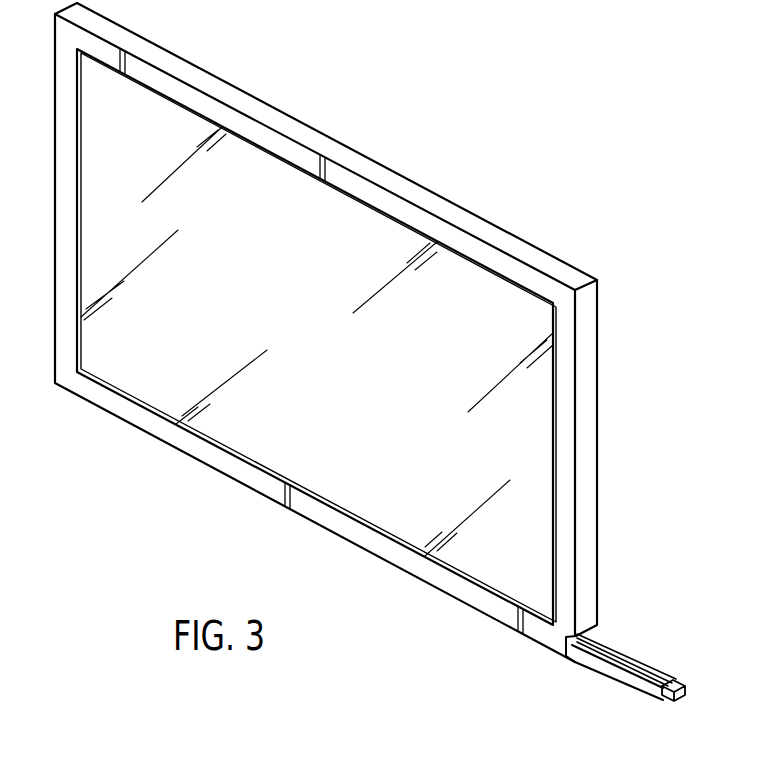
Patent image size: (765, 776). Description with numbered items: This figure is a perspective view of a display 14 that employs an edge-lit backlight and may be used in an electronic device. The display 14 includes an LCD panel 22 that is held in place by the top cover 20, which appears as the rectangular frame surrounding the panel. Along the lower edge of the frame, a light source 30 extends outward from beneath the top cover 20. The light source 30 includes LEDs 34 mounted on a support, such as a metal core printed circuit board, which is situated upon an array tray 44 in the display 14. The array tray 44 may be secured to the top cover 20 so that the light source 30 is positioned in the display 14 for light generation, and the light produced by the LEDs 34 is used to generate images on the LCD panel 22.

The display 14 is at (379, 360).
The top cover 20 is at (567, 425).
The LCD panel 22 is at (510, 313).
The light source 30 is at (621, 666).
The array tray 44 is at (607, 638).
The LEDs 34 is at (677, 673).